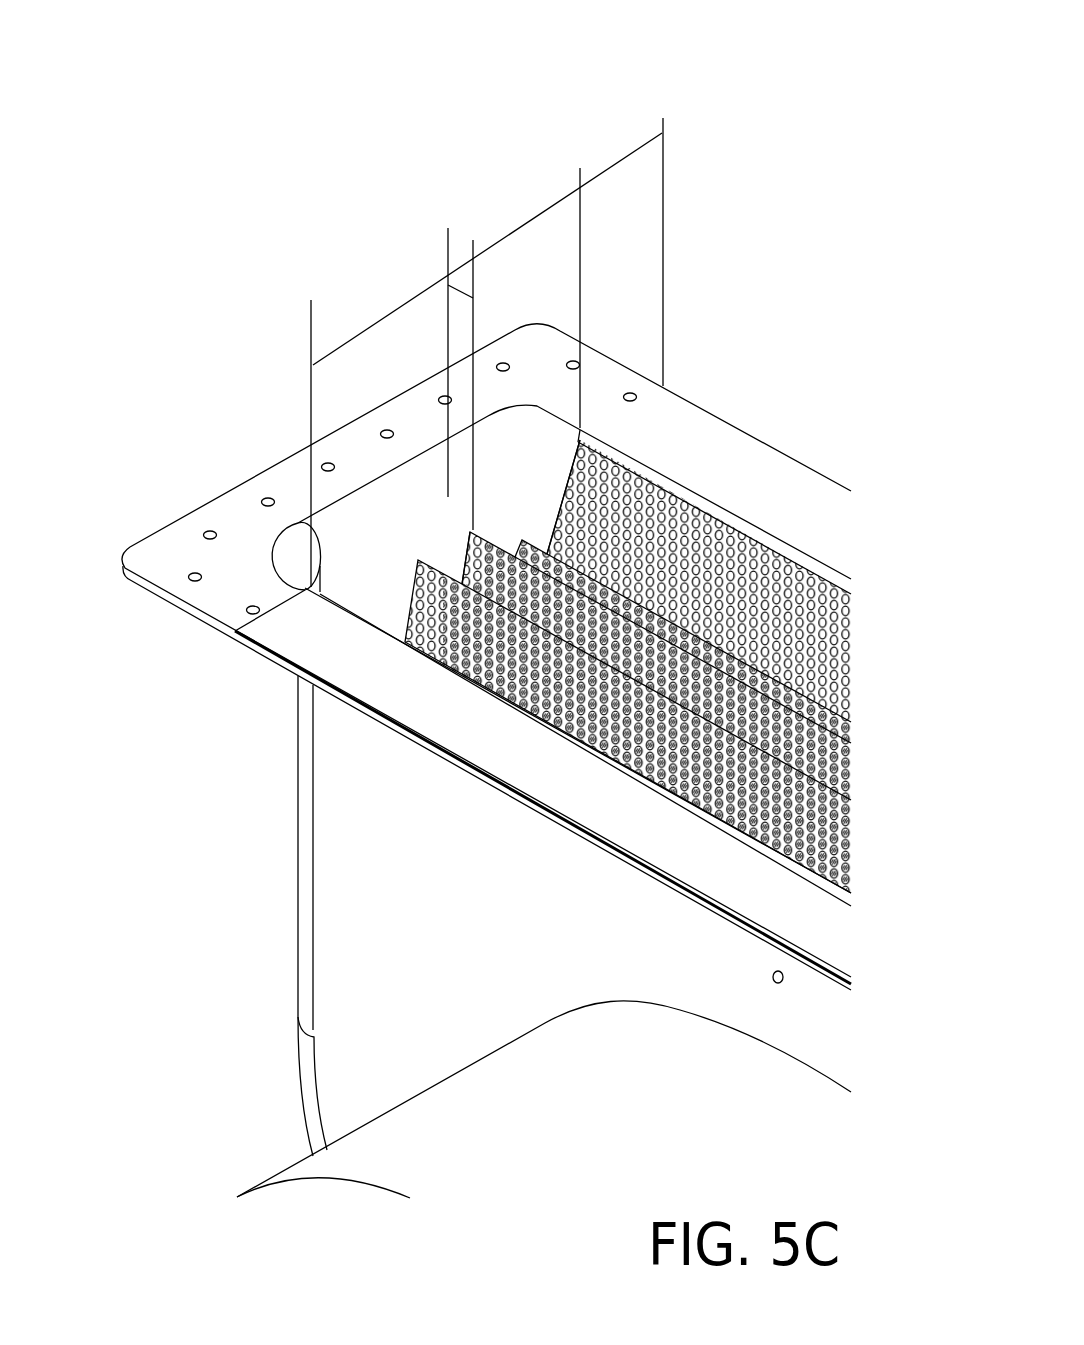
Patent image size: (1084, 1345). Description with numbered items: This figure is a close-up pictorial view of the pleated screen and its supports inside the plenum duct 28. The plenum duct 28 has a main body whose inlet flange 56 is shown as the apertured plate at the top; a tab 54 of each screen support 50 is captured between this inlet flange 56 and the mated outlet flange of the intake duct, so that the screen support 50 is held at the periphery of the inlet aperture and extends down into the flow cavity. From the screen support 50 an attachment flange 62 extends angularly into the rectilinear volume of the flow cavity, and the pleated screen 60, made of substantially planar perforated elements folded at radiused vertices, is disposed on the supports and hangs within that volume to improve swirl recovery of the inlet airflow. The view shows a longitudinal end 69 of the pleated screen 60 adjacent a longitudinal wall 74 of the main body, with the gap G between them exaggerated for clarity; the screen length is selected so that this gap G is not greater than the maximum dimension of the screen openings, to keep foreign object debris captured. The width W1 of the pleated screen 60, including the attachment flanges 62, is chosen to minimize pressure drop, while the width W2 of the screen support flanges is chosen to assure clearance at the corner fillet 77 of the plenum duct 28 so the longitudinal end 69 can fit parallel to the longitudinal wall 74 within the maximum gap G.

The plenum duct 28 is at (337, 205).
The inlet flange 56 is at (247, 520).
The longitudinal wall 74 is at (367, 565).
The tab 54 is at (695, 427).
The pleated screen 60 is at (570, 587).
The attachment flange 62 is at (770, 610).
The screen support 50 is at (760, 443).
The corner fillet 77 is at (472, 525).
The longitudinal end 69 is at (548, 455).
The gap G is at (460, 288).
The width of the pleated screen W1 is at (403, 300).
The width of the screen support flanges W2 is at (628, 157).